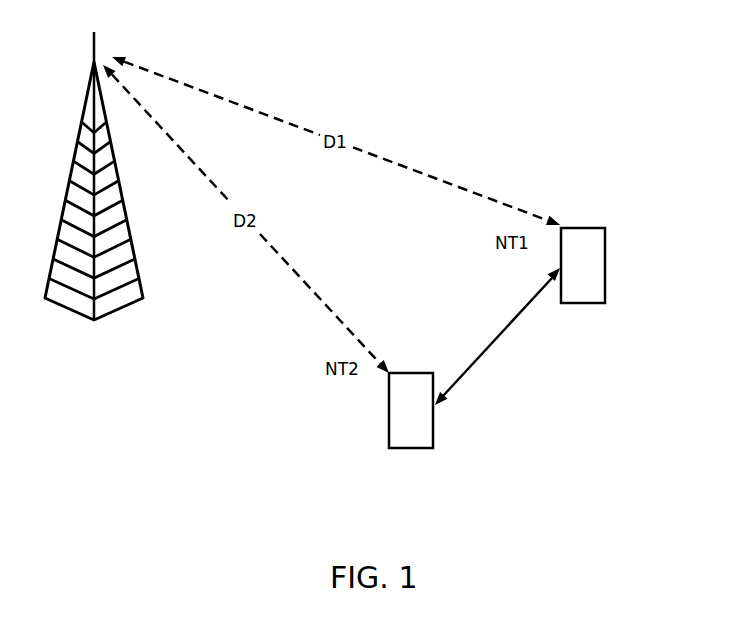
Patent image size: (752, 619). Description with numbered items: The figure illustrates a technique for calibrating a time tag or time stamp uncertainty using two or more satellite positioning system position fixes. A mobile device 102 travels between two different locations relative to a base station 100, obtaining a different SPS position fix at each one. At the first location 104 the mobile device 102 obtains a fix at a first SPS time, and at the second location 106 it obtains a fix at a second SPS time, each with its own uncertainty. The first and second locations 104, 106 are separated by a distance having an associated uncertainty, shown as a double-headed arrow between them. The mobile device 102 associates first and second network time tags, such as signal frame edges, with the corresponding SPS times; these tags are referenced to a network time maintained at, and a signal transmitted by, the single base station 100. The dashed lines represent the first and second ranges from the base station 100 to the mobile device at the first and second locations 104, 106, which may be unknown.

The base station 100 is at (112, 313).
The mobile device 102 is at (433, 427).
The first location 104 is at (585, 228).
The second location 106 is at (405, 448).